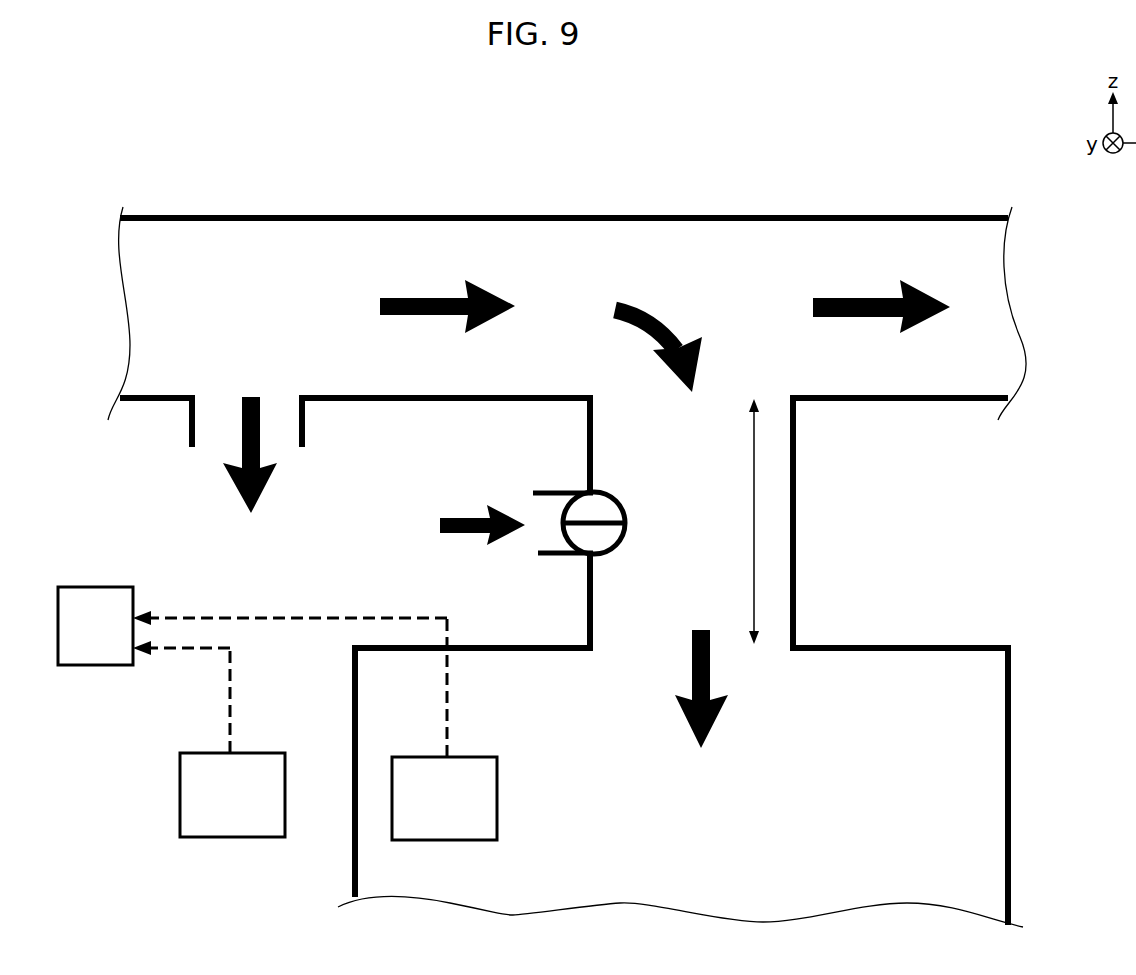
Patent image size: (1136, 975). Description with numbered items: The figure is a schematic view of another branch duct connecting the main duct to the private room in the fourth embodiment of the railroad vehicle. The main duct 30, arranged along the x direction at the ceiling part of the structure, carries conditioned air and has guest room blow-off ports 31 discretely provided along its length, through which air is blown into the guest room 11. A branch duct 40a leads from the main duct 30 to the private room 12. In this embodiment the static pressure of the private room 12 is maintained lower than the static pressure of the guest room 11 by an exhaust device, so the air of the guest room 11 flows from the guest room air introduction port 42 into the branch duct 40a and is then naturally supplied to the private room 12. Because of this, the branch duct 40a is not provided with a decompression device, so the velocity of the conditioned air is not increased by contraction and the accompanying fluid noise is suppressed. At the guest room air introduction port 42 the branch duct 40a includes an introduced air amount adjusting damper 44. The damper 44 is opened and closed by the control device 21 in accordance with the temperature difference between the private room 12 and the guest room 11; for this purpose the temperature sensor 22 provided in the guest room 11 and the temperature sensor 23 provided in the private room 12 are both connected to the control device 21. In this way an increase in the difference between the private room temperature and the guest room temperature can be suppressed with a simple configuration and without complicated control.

The main duct 30 is at (567, 313).
The guest room blow-off port 31 is at (215, 440).
The introduced air amount adjusting damper 44 is at (605, 510).
The guest room air introduction port 42 is at (549, 536).
The branch duct 40a is at (736, 521).
The control device 21 is at (252, 626).
The temperature sensor 22 is at (232, 742).
The temperature sensor 23 is at (444, 729).
The guest room 11 is at (614, 661).
The private room 12 is at (841, 660).